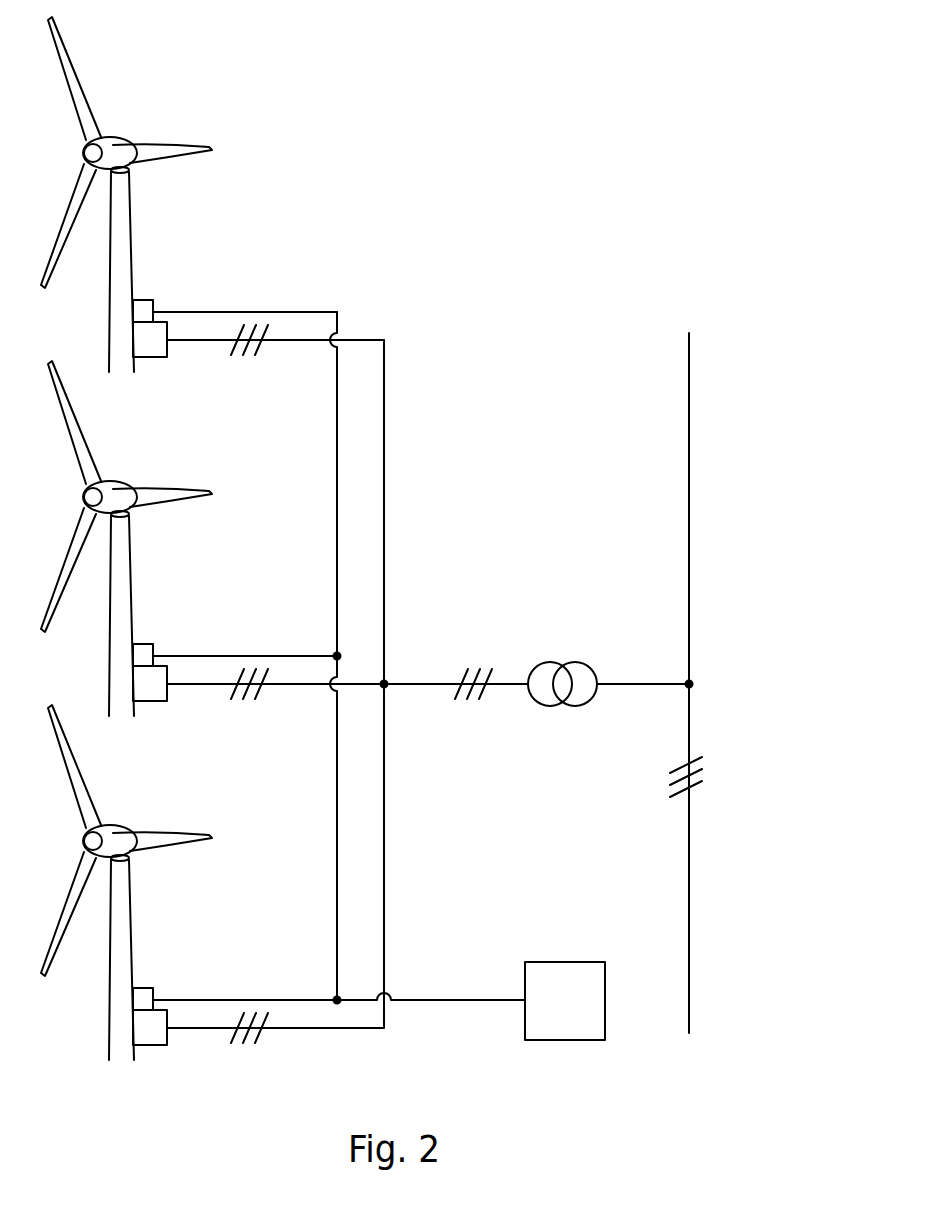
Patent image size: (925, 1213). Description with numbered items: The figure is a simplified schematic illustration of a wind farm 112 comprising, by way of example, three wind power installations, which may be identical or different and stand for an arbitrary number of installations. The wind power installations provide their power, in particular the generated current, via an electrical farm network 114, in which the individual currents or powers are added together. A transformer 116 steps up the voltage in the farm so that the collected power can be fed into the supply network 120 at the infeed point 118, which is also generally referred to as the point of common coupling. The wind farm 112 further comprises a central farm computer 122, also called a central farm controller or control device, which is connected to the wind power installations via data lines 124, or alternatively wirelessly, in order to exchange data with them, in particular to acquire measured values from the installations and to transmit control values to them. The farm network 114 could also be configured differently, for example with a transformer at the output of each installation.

The wind farm 112 is at (508, 203).
The electrical farm network 114 is at (412, 683).
The transformer 116 is at (571, 652).
The infeed point 118 is at (698, 672).
The supply network 120 is at (690, 408).
The central farm computer 122 is at (555, 962).
The data lines 124 is at (337, 828).